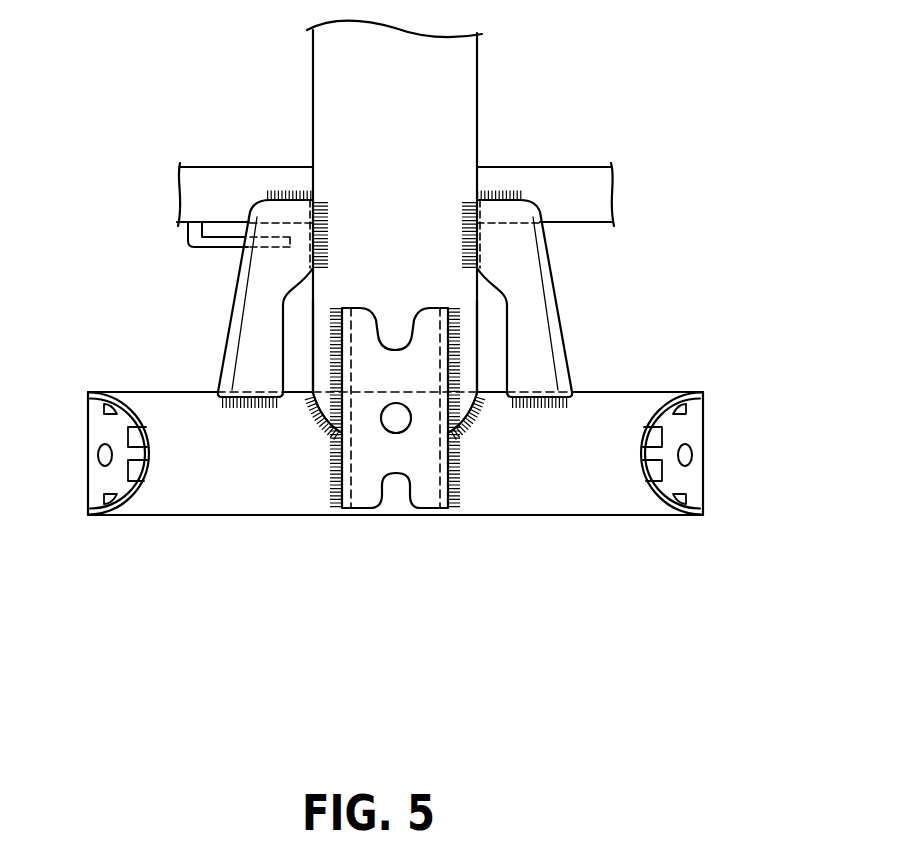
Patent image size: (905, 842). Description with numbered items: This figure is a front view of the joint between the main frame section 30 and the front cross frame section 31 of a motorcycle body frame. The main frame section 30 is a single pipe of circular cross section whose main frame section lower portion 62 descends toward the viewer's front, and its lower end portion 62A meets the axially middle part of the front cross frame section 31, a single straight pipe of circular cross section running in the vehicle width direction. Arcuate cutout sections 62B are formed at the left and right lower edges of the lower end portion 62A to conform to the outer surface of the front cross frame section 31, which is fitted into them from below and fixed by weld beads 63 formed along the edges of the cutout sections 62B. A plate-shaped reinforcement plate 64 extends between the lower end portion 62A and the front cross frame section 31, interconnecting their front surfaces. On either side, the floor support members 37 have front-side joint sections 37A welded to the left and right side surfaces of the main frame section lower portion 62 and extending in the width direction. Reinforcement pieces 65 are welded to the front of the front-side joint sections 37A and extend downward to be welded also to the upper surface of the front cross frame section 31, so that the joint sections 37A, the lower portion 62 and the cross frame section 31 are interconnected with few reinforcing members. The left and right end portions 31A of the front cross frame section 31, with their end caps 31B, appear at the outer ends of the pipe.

The main frame section 30 is at (482, 45).
The main frame section lower portion 62 is at (480, 103).
The lower end portion 62A is at (327, 353).
The cutout sections 62B is at (320, 396).
The weld beads 63 is at (395, 413).
The reinforcement plate 64 is at (419, 470).
The reinforcement pieces 65 is at (240, 293).
The floor support members 37 is at (191, 166).
The front-side joint sections 37A is at (257, 165).
The front cross frame section 31 is at (498, 517).
The end portions 31A is at (148, 397).
The end cap of beam 31B is at (108, 427).